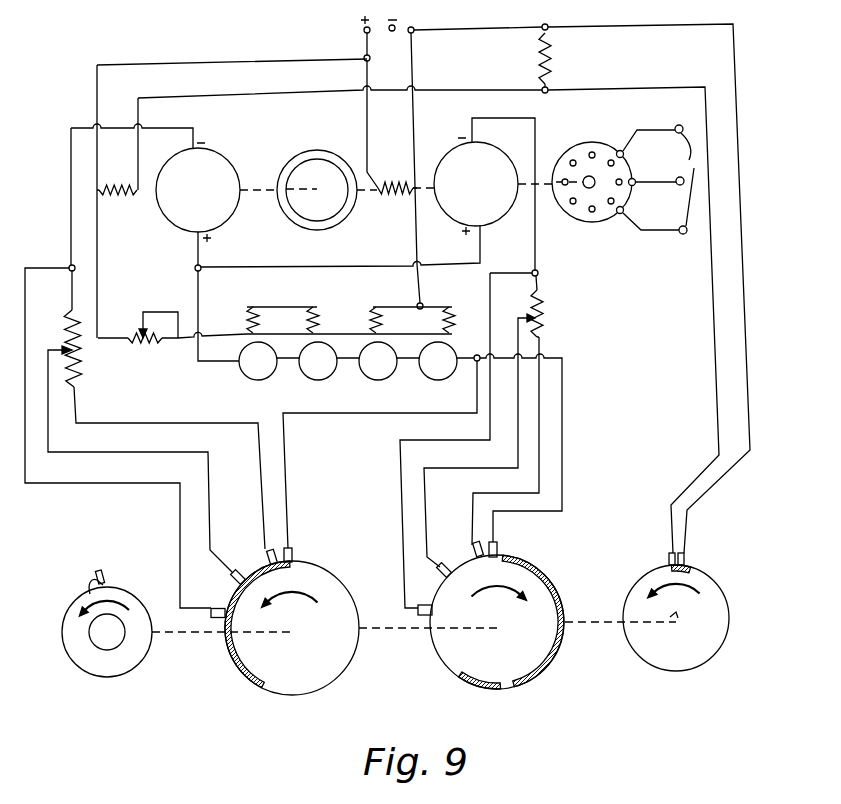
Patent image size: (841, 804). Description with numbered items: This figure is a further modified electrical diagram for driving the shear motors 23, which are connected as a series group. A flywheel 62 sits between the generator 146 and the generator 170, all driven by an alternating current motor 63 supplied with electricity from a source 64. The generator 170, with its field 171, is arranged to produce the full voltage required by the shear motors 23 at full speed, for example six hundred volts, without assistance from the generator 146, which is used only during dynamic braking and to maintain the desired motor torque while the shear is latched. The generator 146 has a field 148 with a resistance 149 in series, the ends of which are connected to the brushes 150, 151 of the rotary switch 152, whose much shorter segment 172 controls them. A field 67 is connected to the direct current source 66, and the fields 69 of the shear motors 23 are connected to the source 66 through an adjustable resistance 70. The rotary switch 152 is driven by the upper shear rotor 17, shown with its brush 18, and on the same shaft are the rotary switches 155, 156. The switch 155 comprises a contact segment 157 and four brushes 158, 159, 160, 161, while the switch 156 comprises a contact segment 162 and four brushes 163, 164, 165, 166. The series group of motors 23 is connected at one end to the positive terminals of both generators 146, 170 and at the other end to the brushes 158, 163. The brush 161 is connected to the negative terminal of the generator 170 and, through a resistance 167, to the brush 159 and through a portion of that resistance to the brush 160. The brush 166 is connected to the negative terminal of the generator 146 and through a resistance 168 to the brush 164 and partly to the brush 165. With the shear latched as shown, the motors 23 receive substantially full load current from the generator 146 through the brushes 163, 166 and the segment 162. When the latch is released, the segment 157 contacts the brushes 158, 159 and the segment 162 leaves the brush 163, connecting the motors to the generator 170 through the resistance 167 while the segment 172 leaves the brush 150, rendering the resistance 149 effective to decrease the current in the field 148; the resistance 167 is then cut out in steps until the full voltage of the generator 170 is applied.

The source of direct current 66 is at (387, 32).
The resistance 149 is at (560, 58).
The field 148 is at (117, 201).
The generator 146 is at (223, 215).
The flywheel 62 is at (322, 160).
The field 171 is at (397, 196).
The generator 170 is at (482, 147).
The alternating current motor 63 is at (605, 135).
The source 64 is at (664, 179).
The resistance 168 is at (58, 329).
The adjustable resistance 70 is at (145, 346).
The field 67 is at (312, 322).
The fields 69 is at (445, 320).
The shear motors 23 is at (405, 382).
The resistance 167 is at (552, 303).
The upper shear rotor 17 is at (100, 673).
The brush 18 is at (106, 575).
The rotary switch 156 is at (292, 628).
The contact segment 162 is at (232, 655).
The brush 163 is at (295, 553).
The brush 164 is at (266, 558).
The brush 165 is at (232, 581).
The brush 166 is at (215, 621).
The rotary switch 155 is at (497, 622).
The contact segment 157 is at (548, 581).
The brush 158 is at (498, 549).
The brush 159 is at (476, 546).
The brush 160 is at (438, 572).
The brush 161 is at (416, 618).
The rotary switch 152 is at (676, 618).
The segment 172 is at (690, 570).
The brush 150 is at (685, 559).
The brush 151 is at (669, 560).